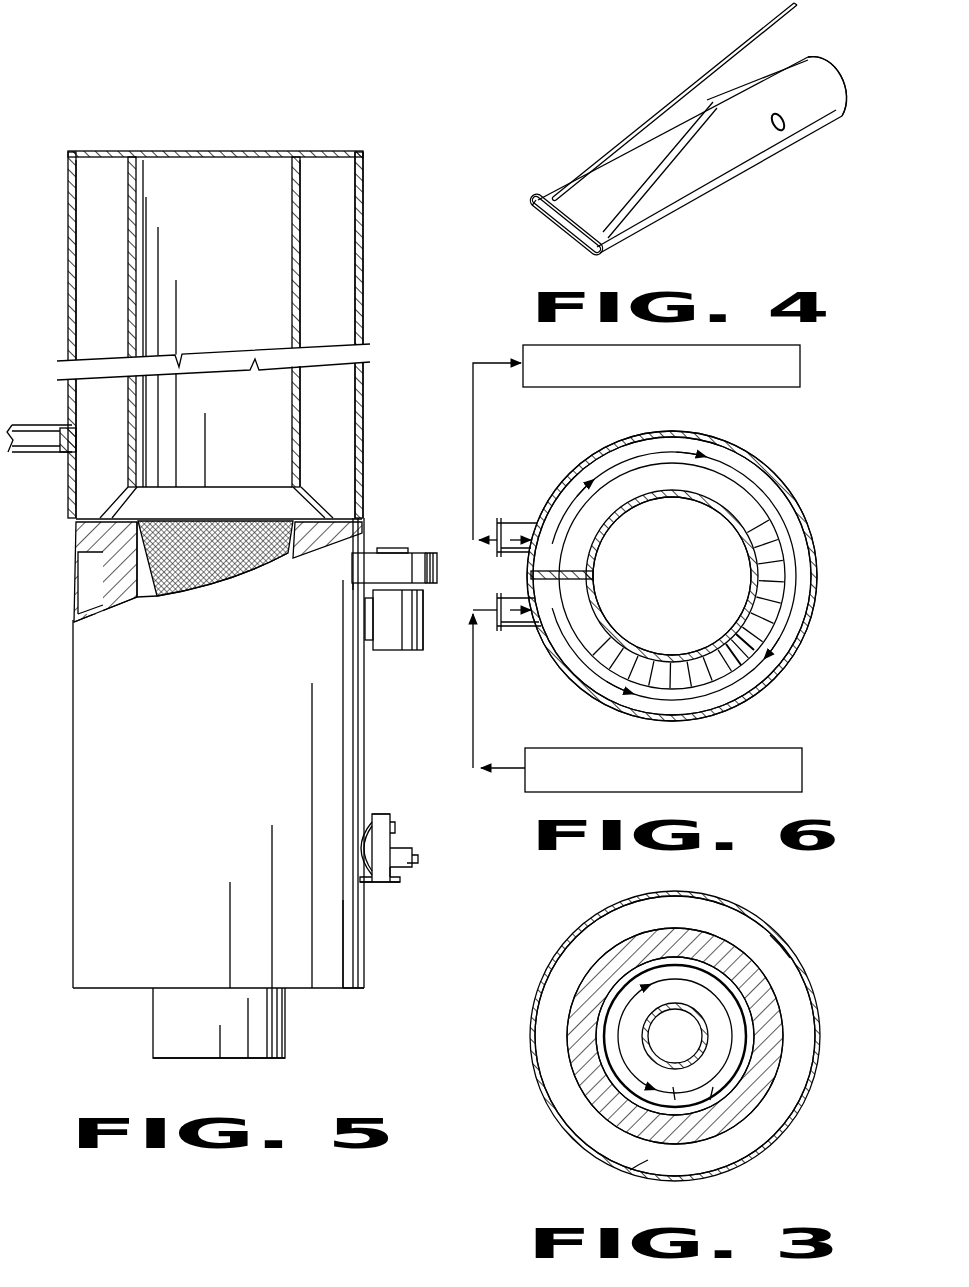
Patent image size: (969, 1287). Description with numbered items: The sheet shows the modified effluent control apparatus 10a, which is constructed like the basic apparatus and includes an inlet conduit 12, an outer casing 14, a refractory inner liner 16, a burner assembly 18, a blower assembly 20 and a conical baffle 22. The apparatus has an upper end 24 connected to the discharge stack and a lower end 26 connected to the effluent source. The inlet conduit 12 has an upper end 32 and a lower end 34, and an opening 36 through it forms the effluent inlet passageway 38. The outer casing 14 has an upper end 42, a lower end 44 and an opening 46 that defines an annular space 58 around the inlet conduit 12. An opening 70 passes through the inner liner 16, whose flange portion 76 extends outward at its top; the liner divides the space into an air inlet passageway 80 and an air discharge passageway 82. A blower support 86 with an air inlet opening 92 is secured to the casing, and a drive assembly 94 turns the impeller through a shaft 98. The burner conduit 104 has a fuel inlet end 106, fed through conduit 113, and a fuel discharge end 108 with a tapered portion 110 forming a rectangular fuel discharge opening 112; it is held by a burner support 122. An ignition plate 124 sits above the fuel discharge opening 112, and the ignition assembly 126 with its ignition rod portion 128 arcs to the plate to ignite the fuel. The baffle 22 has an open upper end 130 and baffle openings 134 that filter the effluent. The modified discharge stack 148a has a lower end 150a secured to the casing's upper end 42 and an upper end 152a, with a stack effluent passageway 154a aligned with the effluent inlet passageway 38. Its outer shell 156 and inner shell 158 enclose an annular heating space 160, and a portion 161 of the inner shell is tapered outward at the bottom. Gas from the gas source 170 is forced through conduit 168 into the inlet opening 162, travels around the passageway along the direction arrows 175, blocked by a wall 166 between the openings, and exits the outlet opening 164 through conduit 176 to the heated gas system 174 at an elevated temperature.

In FIG. 5, the modified effluent control apparatus 10a is at (372, 683).
In FIG. 6, the modified effluent control apparatus 10a is at (800, 661).
In FIG. 5, the inlet conduit 12 is at (286, 1031).
In FIG. 3, the inlet conduit 12 is at (607, 1043).
In FIG. 5, the outer casing 14 is at (360, 938).
In FIG. 3, the outer casing 14 is at (786, 1133).
In FIG. 5, the inner liner 16 is at (123, 566).
In FIG. 3, the inner liner 16 is at (713, 958).
In FIG. 5, the burner assembly 18 is at (381, 803).
In FIG. 4, the burner assembly 18 is at (697, 201).
In FIG. 5, the blower assembly 20 is at (410, 546).
In FIG. 5, the baffle 22 is at (305, 502).
In FIG. 3, the baffle 22 is at (707, 1034).
In FIG. 5, the upper end 24 is at (96, 514).
In FIG. 5, the lower end 26 is at (360, 989).
In FIG. 3, the upper end 32 is at (706, 1090).
In FIG. 5, the lower end 34 is at (276, 1059).
In FIG. 3, the opening 36 is at (680, 1090).
In FIG. 3, the effluent inlet passageway 38 is at (640, 990).
In FIG. 5, the upper end 42 is at (76, 518).
In FIG. 5, the lower end 44 is at (345, 990).
In FIG. 5, the opening 46 is at (77, 614).
In FIG. 3, the opening 46 is at (813, 1076).
In FIG. 3, the annular space 58 is at (781, 968).
In FIG. 5, the opening 70 is at (143, 601).
In FIG. 3, the opening 70 is at (700, 962).
In FIG. 5, the flange portion 76 is at (90, 538).
In FIG. 5, the annular space 80 is at (96, 622).
In FIG. 3, the annular space 80 is at (646, 1156).
In FIG. 3, the annular space 82 is at (629, 1103).
In FIG. 5, the blower support 86 is at (437, 577).
In FIG. 5, the air inlet opening 92 is at (412, 551).
In FIG. 5, the drive assembly 94 is at (415, 624).
In FIG. 5, the shaft 98 is at (400, 593).
In FIG. 5, the burner conduit 104 is at (396, 868).
In FIG. 4, the burner conduit 104 is at (790, 131).
In FIG. 5, the fuel inlet end 106 is at (392, 851).
In FIG. 4, the fuel inlet end 106 is at (842, 82).
In FIG. 4, the fuel discharge end 108 is at (592, 258).
In FIG. 4, the tapered portion 110 is at (650, 168).
In FIG. 4, the fuel discharge opening 112 is at (575, 246).
In FIG. 5, the conduit 113 is at (419, 860).
In FIG. 5, the burner support 122 is at (380, 885).
In FIG. 4, the ignition plate 124 is at (534, 210).
In FIG. 4, the ignition assembly 126 is at (681, 83).
In FIG. 4, the ignition rod portion 128 is at (725, 66).
In FIG. 5, the open upper end 130 is at (214, 524).
In FIG. 5, the baffle openings 134 is at (217, 573).
In FIG. 5, the modified discharge stack 148a is at (363, 184).
In FIG. 6, the modified discharge stack 148a is at (801, 514).
In FIG. 5, the lower end 150a is at (358, 521).
In FIG. 5, the upper end 152a is at (359, 151).
In FIG. 5, the stack effluent passageway 154a is at (139, 233).
In FIG. 6, the stack effluent passageway 154a is at (633, 513).
In FIG. 5, the outer shell 156 is at (363, 244).
In FIG. 6, the outer shell 156 is at (815, 559).
In FIG. 5, the inner shell 158 is at (136, 291).
In FIG. 6, the inner shell 158 is at (614, 648).
In FIG. 5, the annular heating space 160 is at (332, 398).
In FIG. 6, the annular heating space 160 is at (797, 593).
In FIG. 5, the tapered portion 161 is at (168, 487).
In FIG. 6, the tapered portion 161 is at (648, 668).
In FIG. 5, the inlet opening 162 is at (78, 441).
In FIG. 6, the inlet opening 162 is at (527, 632).
In FIG. 6, the outlet opening 164 is at (548, 527).
In FIG. 5, the wall 166 is at (90, 276).
In FIG. 6, the wall 166 is at (584, 573).
In FIG. 5, the conduit 168 is at (30, 430).
In FIG. 6, the conduit 168 is at (474, 726).
In FIG. 6, the gas source 170 is at (742, 750).
In FIG. 6, the heated gas system 174 is at (703, 388).
In FIG. 6, the direction arrows 175 is at (600, 470).
In FIG. 6, the conduit 176 is at (474, 430).